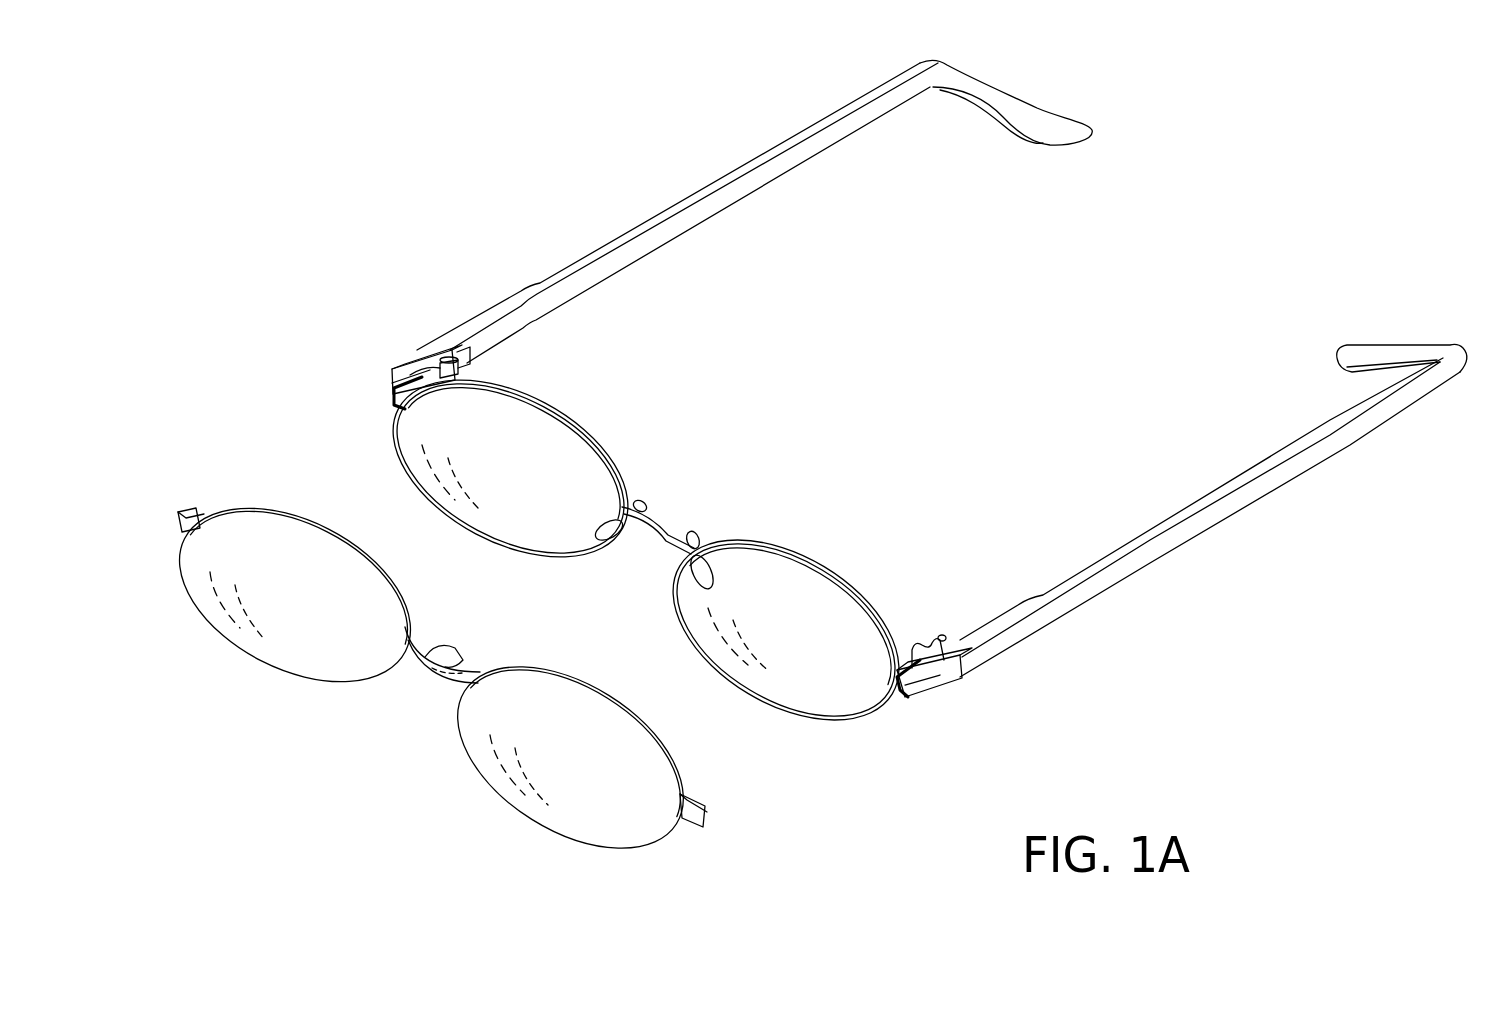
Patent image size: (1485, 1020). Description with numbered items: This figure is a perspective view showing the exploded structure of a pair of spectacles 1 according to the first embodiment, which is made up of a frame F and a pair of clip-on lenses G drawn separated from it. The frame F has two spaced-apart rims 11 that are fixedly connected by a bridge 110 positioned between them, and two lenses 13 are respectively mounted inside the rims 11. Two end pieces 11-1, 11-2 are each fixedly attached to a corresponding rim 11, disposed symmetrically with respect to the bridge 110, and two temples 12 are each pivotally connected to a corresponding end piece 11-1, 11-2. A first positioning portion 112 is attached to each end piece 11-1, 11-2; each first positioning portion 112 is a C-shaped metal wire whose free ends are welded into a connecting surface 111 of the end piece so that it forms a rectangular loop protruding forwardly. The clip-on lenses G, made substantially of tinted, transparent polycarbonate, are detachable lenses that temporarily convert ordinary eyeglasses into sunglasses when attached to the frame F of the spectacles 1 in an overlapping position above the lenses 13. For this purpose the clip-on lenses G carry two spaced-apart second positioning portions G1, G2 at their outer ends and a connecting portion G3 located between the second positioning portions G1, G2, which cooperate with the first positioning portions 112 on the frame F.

The spectacles 1 is at (1319, 707).
The frame F is at (1140, 712).
The rim 11 is at (890, 707).
The end piece 11-1 is at (938, 655).
The end piece 11-2 is at (414, 365).
The bridge 110 is at (660, 533).
The surface 111 is at (390, 380).
The first positioning portion 112 is at (387, 403).
The temple 12 is at (1003, 653).
The lens 13 is at (815, 683).
The clip-on lenses G is at (272, 677).
The second positioning portion G1 is at (692, 800).
The second positioning portion G2 is at (185, 507).
The connecting portion G3 is at (430, 655).